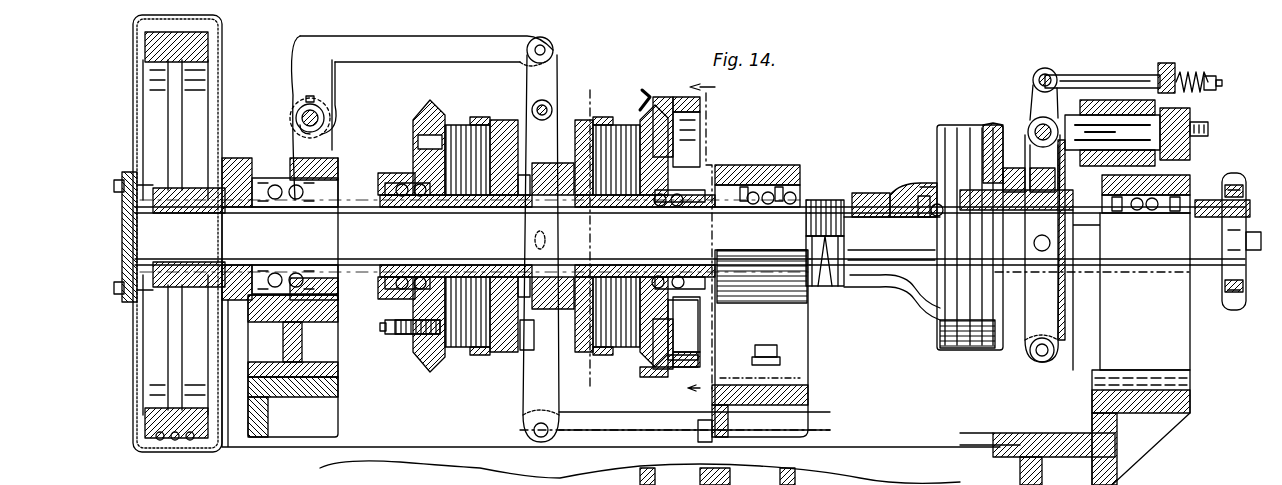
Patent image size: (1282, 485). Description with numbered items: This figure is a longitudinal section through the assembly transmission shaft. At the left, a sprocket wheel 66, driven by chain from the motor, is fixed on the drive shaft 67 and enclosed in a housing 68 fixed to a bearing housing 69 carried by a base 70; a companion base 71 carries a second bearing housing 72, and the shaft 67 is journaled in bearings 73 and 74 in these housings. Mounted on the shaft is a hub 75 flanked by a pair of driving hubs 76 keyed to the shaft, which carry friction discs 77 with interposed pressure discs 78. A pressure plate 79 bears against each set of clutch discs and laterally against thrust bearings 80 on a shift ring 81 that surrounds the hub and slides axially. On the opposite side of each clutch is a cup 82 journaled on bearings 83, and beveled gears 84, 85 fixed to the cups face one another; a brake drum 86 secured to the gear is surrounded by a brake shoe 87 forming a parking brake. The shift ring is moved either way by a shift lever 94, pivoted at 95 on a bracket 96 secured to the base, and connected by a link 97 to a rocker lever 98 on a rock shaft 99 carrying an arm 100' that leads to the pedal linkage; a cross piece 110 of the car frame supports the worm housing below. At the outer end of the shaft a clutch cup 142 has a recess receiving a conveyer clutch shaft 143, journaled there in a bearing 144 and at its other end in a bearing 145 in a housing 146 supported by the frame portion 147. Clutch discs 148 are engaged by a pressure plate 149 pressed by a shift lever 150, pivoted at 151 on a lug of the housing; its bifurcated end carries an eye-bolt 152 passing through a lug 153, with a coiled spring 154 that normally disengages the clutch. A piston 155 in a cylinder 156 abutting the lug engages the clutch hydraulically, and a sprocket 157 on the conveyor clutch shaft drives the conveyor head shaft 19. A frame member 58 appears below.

The head shaft 19 is at (716, 86).
The machine frame member 58 is at (717, 476).
The sprocket wheel 66 is at (216, 28).
The drive shaft 67 is at (347, 207).
The housing 68 is at (219, 64).
The bearing housing 69 is at (338, 325).
The base 70 is at (338, 393).
The companion base 71 is at (808, 393).
The bearing housing 72 is at (773, 170).
The bearing 73 is at (252, 158).
The bearing 74 is at (760, 165).
The hub 75 is at (522, 207).
The driving hubs 76 is at (485, 207).
The friction discs 77 is at (470, 125).
The pressure discs 78 is at (465, 352).
The pressure plate 79 is at (508, 112).
The thrust bearings 80 is at (520, 340).
The shift ring 81 is at (545, 157).
The cup 82 is at (415, 168).
The bearings 83 is at (418, 200).
The beveled gear 84 is at (434, 103).
The beveled gear 85 is at (653, 100).
The brake drum 86 is at (700, 355).
The brake shoe 87 is at (668, 378).
The shift lever 94 is at (523, 403).
The pivot 95 is at (541, 437).
The bracket 96 is at (592, 416).
The link 97 is at (468, 38).
The rocker lever 98 is at (296, 74).
The rock shaft 99 is at (296, 108).
The arm 100' is at (354, 105).
The cross piece 110 is at (940, 430).
The clutch cup 142 is at (925, 285).
The conveyer clutch shaft 143 is at (1118, 225).
The bearing 144 is at (935, 195).
The bearing 145 is at (1188, 178).
The housing 146 is at (1190, 185).
The frame structure portion 147 is at (1190, 402).
The clutch discs 148 is at (975, 125).
The pressure plate 149 is at (996, 135).
The shift lever 150 is at (1030, 325).
The pivot 151 is at (1042, 362).
The eye-bolt 152 is at (1060, 76).
The lug 153 is at (1160, 68).
The coiled spring 154 is at (1192, 76).
The piston 155 is at (1125, 110).
The cylinder 156 is at (1190, 112).
The sprocket 157 is at (1244, 304).